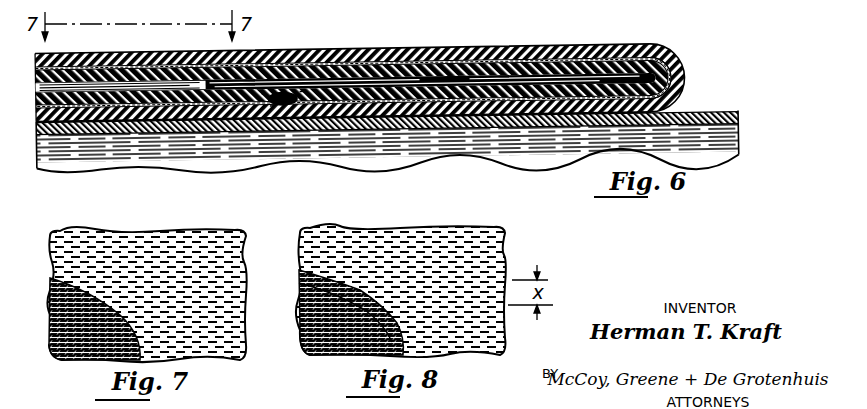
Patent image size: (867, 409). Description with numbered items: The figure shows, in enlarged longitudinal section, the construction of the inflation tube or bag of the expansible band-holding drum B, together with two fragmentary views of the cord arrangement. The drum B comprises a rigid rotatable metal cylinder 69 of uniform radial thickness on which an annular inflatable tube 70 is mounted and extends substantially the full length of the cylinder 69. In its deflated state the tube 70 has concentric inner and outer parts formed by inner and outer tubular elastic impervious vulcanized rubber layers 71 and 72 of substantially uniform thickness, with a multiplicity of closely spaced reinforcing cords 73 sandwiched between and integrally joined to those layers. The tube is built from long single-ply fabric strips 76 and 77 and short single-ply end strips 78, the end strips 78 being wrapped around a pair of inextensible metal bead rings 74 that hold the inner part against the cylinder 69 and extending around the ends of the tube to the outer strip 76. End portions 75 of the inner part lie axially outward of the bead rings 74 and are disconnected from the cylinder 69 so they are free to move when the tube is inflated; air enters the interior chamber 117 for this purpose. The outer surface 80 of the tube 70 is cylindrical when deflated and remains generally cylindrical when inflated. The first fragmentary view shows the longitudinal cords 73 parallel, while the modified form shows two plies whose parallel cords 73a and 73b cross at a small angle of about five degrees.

In FIG. 6, the rigid rotatable metal cylinder 69 is at (387, 145).
In FIG. 7, the inflatable tube 70 is at (183, 230).
In FIG. 8, the inflatable tube 70 is at (482, 228).
In FIG. 6, the inner tubular rubber layer 71 is at (464, 83).
In FIG. 6, the outer tubular rubber layer 72 is at (302, 48).
In FIG. 6, the reinforcing cords 73 is at (103, 55).
In FIG. 7, the reinforcing cords 73 is at (140, 253).
In FIG. 8, the first ply parallel cords 73a is at (387, 229).
In FIG. 8, the second ply parallel cords 73b is at (300, 281).
In FIG. 6, the bead rings 74 is at (298, 107).
In FIG. 6, the end portions 75 is at (497, 113).
In FIG. 6, the long single-ply fabric strip 76 is at (162, 55).
In FIG. 6, the long single-ply fabric strip 77 is at (113, 114).
In FIG. 6, the short single-ply end strips 78 is at (526, 49).
In FIG. 6, the outer surface 80 is at (427, 48).
In FIG. 6, the interior chamber 117 is at (619, 48).
In FIG. 6, the expansible drum B is at (692, 70).